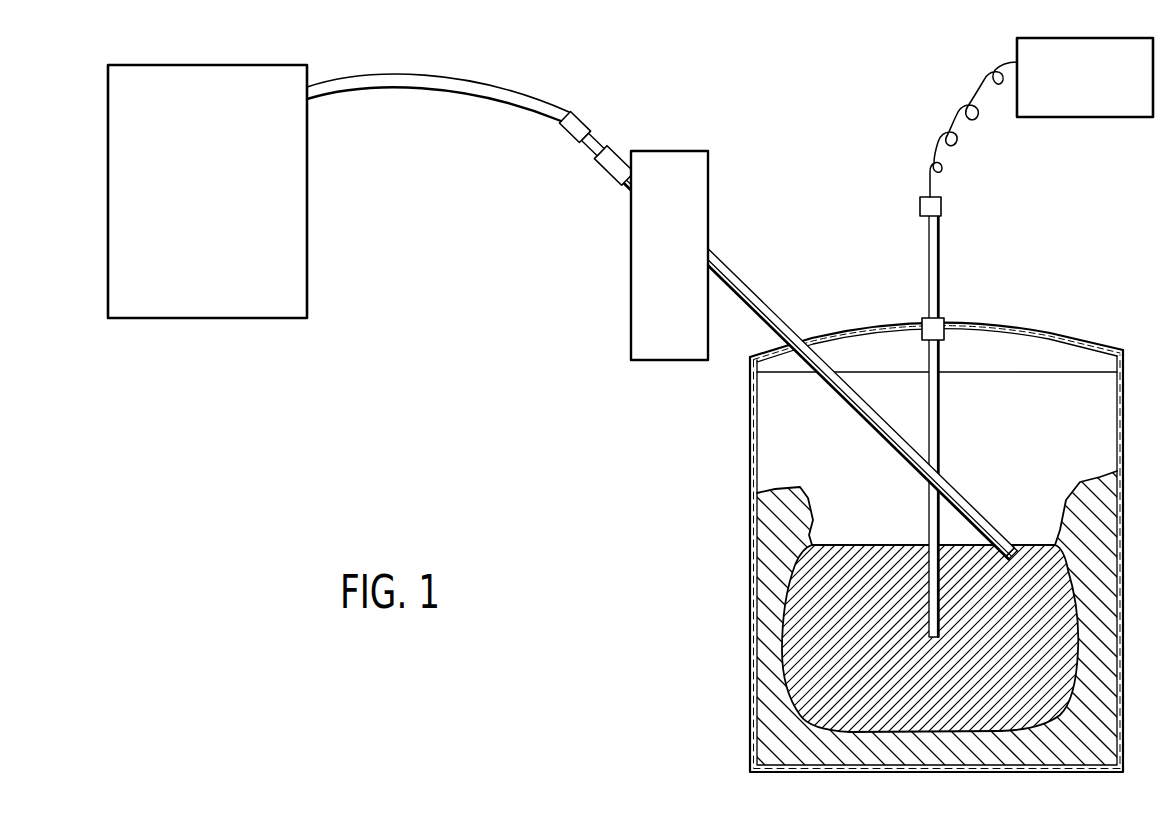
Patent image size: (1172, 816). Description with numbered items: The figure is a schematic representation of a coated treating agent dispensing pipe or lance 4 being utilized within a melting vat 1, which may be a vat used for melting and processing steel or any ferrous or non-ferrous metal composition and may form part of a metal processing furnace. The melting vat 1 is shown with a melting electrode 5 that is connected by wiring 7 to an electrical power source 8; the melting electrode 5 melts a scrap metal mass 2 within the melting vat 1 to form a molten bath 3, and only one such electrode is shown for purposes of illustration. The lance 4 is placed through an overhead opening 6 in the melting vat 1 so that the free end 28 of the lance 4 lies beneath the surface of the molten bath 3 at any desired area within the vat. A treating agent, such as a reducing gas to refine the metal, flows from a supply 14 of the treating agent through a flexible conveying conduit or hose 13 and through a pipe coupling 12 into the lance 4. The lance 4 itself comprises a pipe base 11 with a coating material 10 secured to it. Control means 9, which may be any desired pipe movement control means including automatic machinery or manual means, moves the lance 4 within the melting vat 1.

The melting vat 1 is at (750, 476).
The scrap metal mass 2 is at (781, 493).
The molten bath 3 is at (872, 543).
The lance 4 is at (885, 454).
The melting electrode 5 is at (940, 407).
The overhead opening 6 is at (843, 337).
The wiring 7 is at (948, 113).
The electrical power source 8 is at (1073, 118).
The control means 9 is at (631, 293).
The coating material 10 is at (620, 158).
The pipe base 11 is at (589, 149).
The pipe coupling 12 is at (581, 118).
The hose 13 is at (460, 92).
The supply of treating agent 14 is at (307, 210).
The free end 28 is at (1043, 547).